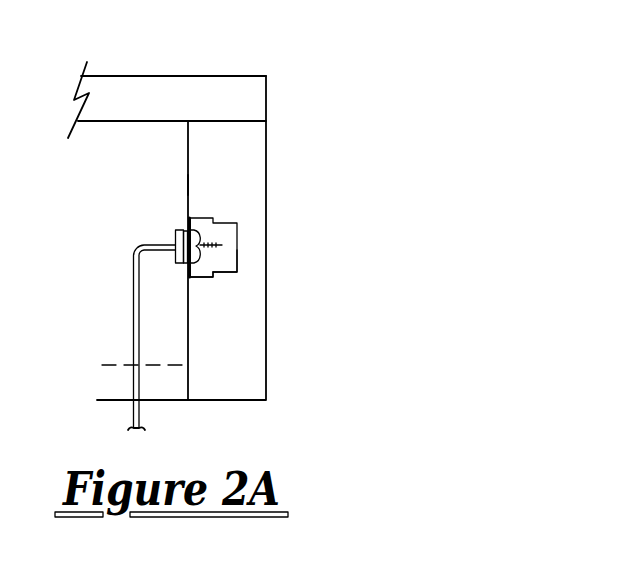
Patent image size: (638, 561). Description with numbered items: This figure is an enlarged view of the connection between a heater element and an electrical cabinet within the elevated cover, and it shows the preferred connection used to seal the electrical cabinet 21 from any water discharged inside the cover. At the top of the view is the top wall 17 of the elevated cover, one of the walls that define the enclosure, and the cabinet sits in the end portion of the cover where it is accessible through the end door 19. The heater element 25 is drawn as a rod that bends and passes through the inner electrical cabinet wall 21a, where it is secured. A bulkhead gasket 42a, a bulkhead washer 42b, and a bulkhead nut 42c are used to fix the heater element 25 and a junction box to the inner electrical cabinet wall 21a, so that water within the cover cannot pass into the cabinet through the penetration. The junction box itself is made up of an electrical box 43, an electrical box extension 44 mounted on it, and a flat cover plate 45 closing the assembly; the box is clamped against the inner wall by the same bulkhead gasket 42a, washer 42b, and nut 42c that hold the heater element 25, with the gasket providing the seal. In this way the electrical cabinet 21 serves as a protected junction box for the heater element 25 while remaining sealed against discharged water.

The top wall 17 is at (203, 87).
The end door 19 is at (267, 185).
The electrical cabinet 21 is at (250, 136).
The inner electrical cabinet wall 21a is at (187, 183).
The heater element 25 is at (132, 333).
The bulkhead gasket 42a is at (187, 229).
The bulkhead washer 42b is at (193, 219).
The bulkhead nut 42c is at (202, 245).
The electrical box 43 is at (203, 278).
The electrical box extension 44 is at (227, 277).
The flat cover plate 45 is at (222, 245).